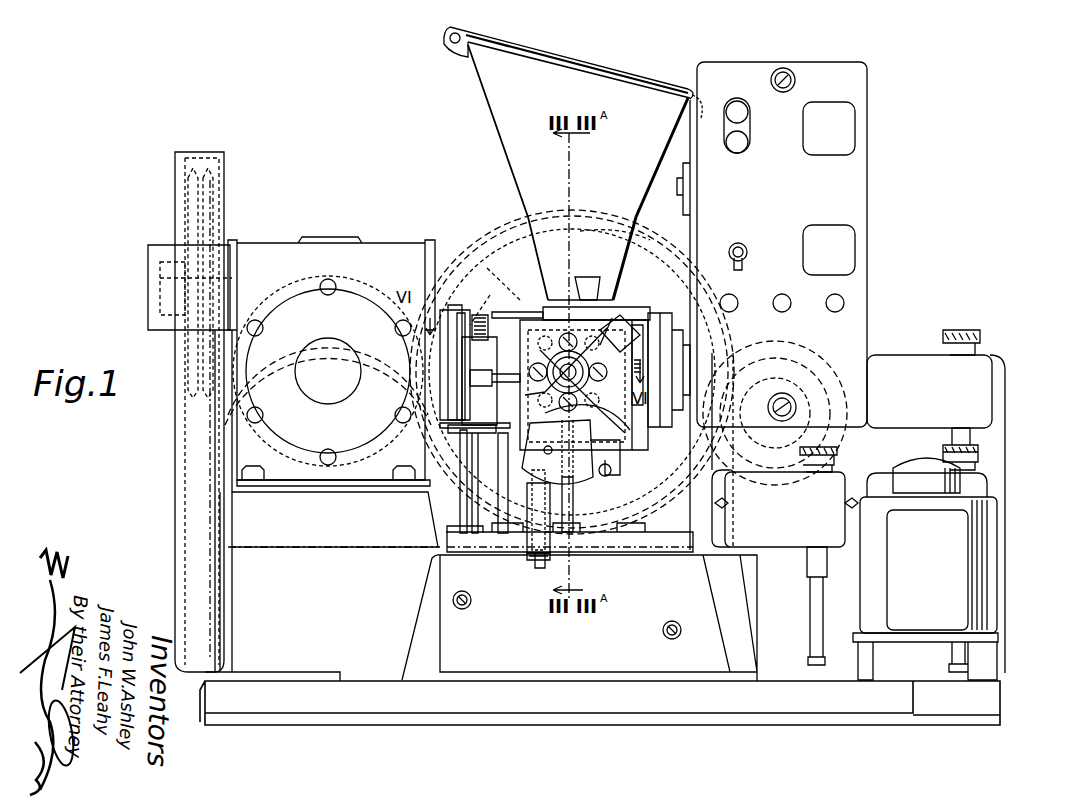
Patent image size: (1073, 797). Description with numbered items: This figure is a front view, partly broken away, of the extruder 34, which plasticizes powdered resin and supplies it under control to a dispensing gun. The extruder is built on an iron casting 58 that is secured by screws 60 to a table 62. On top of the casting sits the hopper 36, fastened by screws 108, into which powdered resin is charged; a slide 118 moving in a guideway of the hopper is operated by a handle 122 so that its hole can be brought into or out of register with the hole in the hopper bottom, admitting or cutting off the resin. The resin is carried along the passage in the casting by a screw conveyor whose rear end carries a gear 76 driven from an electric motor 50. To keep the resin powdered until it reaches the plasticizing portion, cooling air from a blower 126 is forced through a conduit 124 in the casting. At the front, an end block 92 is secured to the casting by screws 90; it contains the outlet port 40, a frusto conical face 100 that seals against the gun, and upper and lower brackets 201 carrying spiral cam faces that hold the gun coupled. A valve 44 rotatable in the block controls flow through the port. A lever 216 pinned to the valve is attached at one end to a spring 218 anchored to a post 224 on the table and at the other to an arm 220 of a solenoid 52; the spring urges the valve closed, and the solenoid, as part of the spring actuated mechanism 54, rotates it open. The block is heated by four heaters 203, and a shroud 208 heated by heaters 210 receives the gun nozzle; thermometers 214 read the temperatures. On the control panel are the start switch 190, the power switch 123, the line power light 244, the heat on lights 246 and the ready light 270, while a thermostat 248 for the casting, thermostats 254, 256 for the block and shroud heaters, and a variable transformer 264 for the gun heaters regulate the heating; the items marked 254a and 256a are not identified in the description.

The hopper 36 is at (500, 129).
The extruder 34 is at (587, 193).
The screws 108 is at (525, 218).
The gear 76 is at (622, 222).
The slide 118 is at (612, 318).
The electric motor 50 is at (442, 224).
The conduit 124 is at (487, 268).
The lever 254a is at (490, 295).
The screws 90 is at (563, 300).
The handle 122 is at (590, 275).
The brackets 201 is at (596, 330).
The end block 92 is at (615, 330).
The iron casting 58 is at (648, 345).
The frusto conical face 100 is at (610, 360).
The spring 218 is at (462, 332).
The spring actuated mechanism 54 is at (434, 364).
The lever 216 is at (472, 338).
The valve 44 is at (492, 342).
The arm 220 is at (470, 374).
The electric heaters 203 is at (528, 385).
The outlet port 40 is at (576, 379).
The thermometers 214 is at (648, 352).
The electric heaters 210 is at (575, 498).
The shroud 208 is at (596, 468).
The screws 60 is at (626, 522).
The solenoid 52 is at (462, 445).
The post 224 is at (437, 505).
The table 62 is at (432, 583).
The pin 256a is at (530, 533).
The start switch 190 is at (740, 103).
The ready light 270 is at (848, 102).
The line power light 244 is at (826, 225).
The main or power switch 123 is at (740, 243).
The heat on lights 246 is at (828, 298).
The blower 126 is at (812, 370).
The thermostat 254 is at (975, 357).
The thermostat 248 is at (830, 485).
The thermostat 256 is at (978, 462).
The variable transformer 264 is at (968, 488).